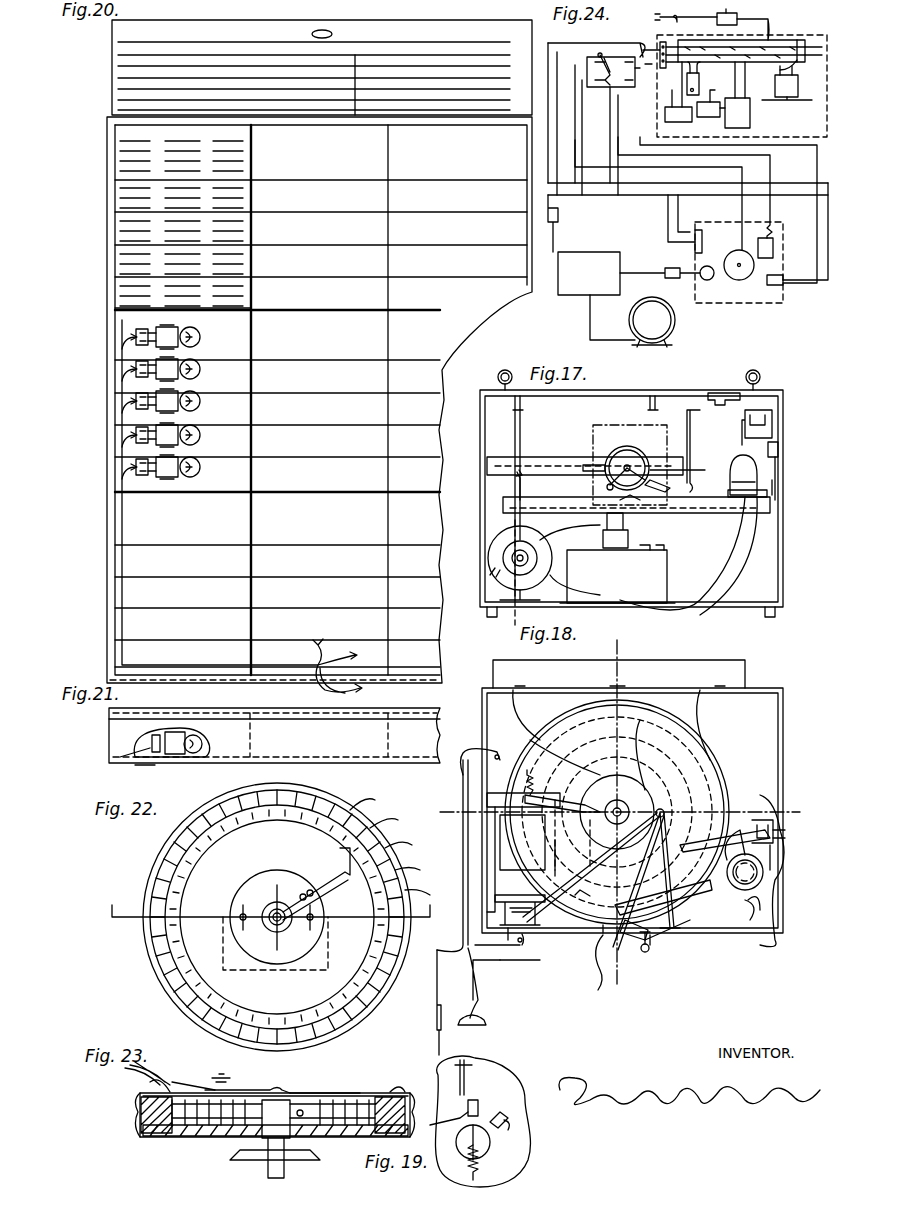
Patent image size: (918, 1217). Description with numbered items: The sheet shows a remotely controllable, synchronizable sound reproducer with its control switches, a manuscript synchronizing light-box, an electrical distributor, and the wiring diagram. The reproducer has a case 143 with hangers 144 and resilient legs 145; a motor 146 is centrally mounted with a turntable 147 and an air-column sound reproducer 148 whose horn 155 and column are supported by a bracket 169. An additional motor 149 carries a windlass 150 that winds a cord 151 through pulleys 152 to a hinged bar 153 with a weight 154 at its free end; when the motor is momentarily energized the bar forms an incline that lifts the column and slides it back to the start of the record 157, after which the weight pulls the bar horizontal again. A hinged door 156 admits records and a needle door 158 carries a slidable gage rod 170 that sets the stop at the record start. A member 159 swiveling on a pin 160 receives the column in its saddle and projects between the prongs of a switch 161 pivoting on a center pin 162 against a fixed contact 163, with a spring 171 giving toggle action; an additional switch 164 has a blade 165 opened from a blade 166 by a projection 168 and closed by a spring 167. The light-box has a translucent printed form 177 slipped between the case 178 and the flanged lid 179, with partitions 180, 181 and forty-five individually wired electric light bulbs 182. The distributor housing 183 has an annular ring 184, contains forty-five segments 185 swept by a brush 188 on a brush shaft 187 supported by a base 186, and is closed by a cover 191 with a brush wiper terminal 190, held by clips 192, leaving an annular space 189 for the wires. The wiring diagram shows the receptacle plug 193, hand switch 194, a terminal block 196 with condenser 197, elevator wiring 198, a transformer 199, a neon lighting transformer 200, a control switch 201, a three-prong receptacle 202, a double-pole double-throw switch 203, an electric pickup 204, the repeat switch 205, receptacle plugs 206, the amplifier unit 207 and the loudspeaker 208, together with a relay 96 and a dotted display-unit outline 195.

In FIG. 24, the relay 96 is at (787, 83).
In FIG. 24, the case 143 is at (784, 300).
In FIG. 17, the case 143 is at (615, 390).
In FIG. 18, the case 143 is at (783, 688).
In FIG. 17, the hangers 144 is at (760, 372).
In FIG. 17, the resilient legs 145 is at (775, 620).
In FIG. 24, the motor 146 is at (721, 286).
In FIG. 17, the motor 146 is at (595, 569).
In FIG. 18, the motor 146 is at (600, 765).
In FIG. 17, the turntable 147 is at (640, 515).
In FIG. 18, the turntable 147 is at (675, 712).
In FIG. 17, the air-column sound reproducer 148 is at (690, 460).
In FIG. 18, the air-column sound reproducer 148 is at (663, 896).
In FIG. 24, the additional motor 149 is at (765, 250).
In FIG. 17, the additional motor 149 is at (535, 545).
In FIG. 18, the additional motor 149 is at (520, 897).
In FIG. 17, the windlass 150 is at (535, 555).
In FIG. 18, the windlass 150 is at (584, 877).
In FIG. 17, the cable or cord 151 is at (516, 436).
In FIG. 18, the cable or cord 151 is at (617, 812).
In FIG. 17, the pulleys 152 is at (522, 408).
In FIG. 17, the hinged bar 153 is at (672, 494).
In FIG. 18, the hinged bar 153 is at (668, 906).
In FIG. 17, the weight 154 is at (655, 490).
In FIG. 18, the weight 154 is at (640, 720).
In FIG. 17, the horn 155 is at (700, 582).
In FIG. 18, the horn 155 is at (540, 712).
In FIG. 17, the hinged door 156 is at (534, 485).
In FIG. 18, the hinged door 156 is at (619, 674).
In FIG. 17, the record 157 is at (598, 494).
In FIG. 18, the record 157 is at (535, 740).
In FIG. 17, the door 158 is at (610, 425).
In FIG. 18, the door 158 is at (604, 965).
In FIG. 19, the member 159 is at (470, 1062).
In FIG. 17, the member 159 is at (688, 424).
In FIG. 18, the member 159 is at (675, 835).
In FIG. 17, the pin 160 is at (730, 393).
In FIG. 19, the switch 161 is at (474, 1100).
In FIG. 17, the switch 161 is at (775, 413).
In FIG. 18, the switch 161 is at (770, 818).
In FIG. 19, the center pin 162 is at (478, 1143).
In FIG. 17, the center pin 162 is at (780, 470).
In FIG. 18, the center pin 162 is at (785, 830).
In FIG. 19, the fixed contact 163 is at (476, 1114).
In FIG. 17, the fixed contact 163 is at (779, 447).
In FIG. 18, the fixed contact 163 is at (770, 905).
In FIG. 24, the additional switch 164 is at (797, 234).
In FIG. 17, the additional switch 164 is at (535, 455).
In FIG. 18, the additional switch 164 is at (505, 795).
In FIG. 18, the switch blade 165 is at (562, 784).
In FIG. 18, the blade 166 is at (545, 840).
In FIG. 18, the spring 167 is at (534, 776).
In FIG. 18, the projection 168 is at (619, 879).
In FIG. 18, the bracket 169 is at (740, 890).
In FIG. 18, the gage rod 170 is at (650, 950).
In FIG. 19, the spring 171 is at (489, 1162).
In FIG. 20, the translucent printed form 177 is at (330, 22).
In FIG. 21, the case 178 is at (92, 780).
In FIG. 20, the lid 179 is at (105, 545).
In FIG. 21, the lid 179 is at (108, 712).
In FIG. 20, the partitions 180 is at (254, 296).
In FIG. 20, the partitions 181 is at (338, 205).
In FIG. 20, the electric light bulbs 182 is at (201, 336).
In FIG. 22, the distributor housing 183 is at (148, 941).
In FIG. 23, the distributor housing 183 is at (207, 1135).
In FIG. 22, the annular ring 184 is at (178, 880).
In FIG. 23, the annular ring 184 is at (172, 1133).
In FIG. 22, the segments 185 is at (160, 880).
In FIG. 22, the base 186 is at (322, 897).
In FIG. 23, the base 186 is at (298, 1160).
In FIG. 23, the brush shaft 187 is at (265, 1172).
In FIG. 22, the brush 188 is at (306, 890).
In FIG. 23, the space 189 is at (140, 1100).
In FIG. 23, the brush wiper terminal 190 is at (250, 1082).
In FIG. 23, the cover 191 is at (320, 1090).
In FIG. 23, the clips 192 is at (138, 1120).
In FIG. 24, the convenience receptacle plug 193 is at (675, 14).
In FIG. 24, the hand switch 194 is at (745, 15).
In FIG. 24, the control unit 195 is at (780, 40).
In FIG. 24, the terminal block 196 is at (795, 70).
In FIG. 24, the condenser 197 is at (818, 46).
In FIG. 24, the wiring 198 is at (741, 95).
In FIG. 24, the transformer 199 is at (708, 112).
In FIG. 24, the neon lighting transformer 200 is at (708, 78).
In FIG. 24, the control switch 201 is at (675, 100).
In FIG. 19, the three-prong convenience receptacle 202 is at (486, 1020).
In FIG. 24, the three-prong convenience receptacle 202 is at (643, 42).
In FIG. 18, the three-prong convenience receptacle 202 is at (507, 947).
In FIG. 24, the double-pole double-throw switch 203 is at (605, 88).
In FIG. 24, the electric pickup 204 is at (705, 280).
In FIG. 19, the repeat switch 205 is at (522, 1172).
In FIG. 24, the repeat switch 205 is at (701, 224).
In FIG. 24, the receptacle plugs 206 is at (673, 268).
In FIG. 24, the amplifier unit 207 is at (596, 296).
In FIG. 24, the loudspeaker 208 is at (652, 322).